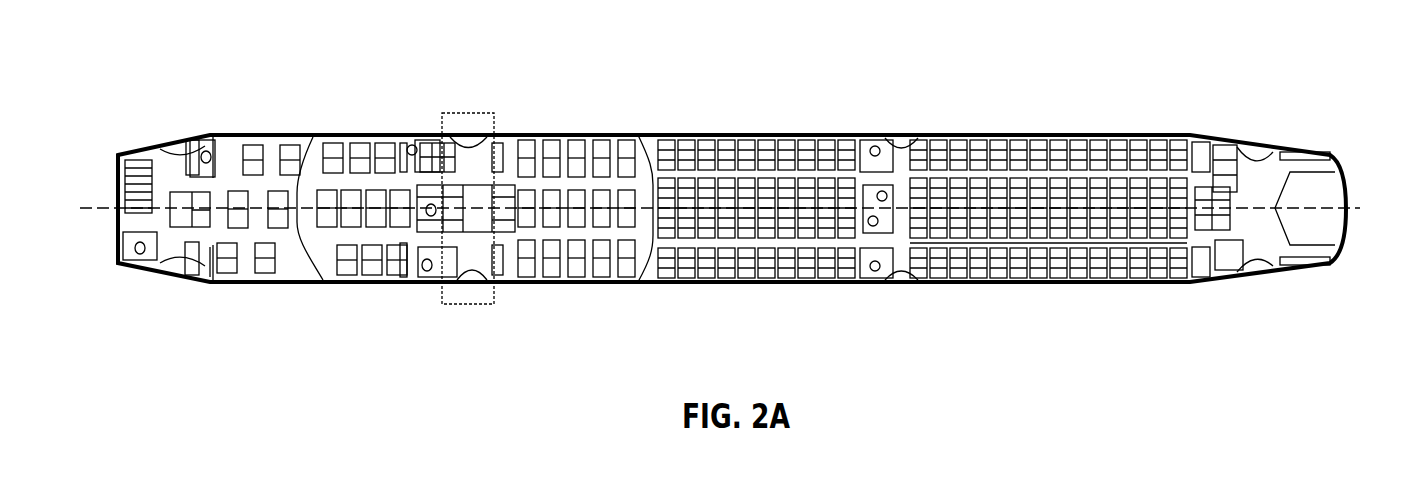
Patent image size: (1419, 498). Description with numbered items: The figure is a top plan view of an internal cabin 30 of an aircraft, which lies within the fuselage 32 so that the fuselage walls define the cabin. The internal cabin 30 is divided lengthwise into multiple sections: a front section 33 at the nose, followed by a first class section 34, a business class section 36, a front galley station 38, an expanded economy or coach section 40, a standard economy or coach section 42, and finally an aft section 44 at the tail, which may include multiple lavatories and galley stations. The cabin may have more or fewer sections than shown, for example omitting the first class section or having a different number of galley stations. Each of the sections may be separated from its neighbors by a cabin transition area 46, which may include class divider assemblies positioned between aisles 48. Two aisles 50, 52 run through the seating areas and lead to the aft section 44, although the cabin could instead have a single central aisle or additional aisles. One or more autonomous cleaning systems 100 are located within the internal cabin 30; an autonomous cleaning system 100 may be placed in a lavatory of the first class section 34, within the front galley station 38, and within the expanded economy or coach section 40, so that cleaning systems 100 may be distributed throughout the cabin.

The internal cabin 30 is at (257, 40).
The fuselage 32 is at (589, 93).
The front section 33 is at (176, 297).
The first class section 34 is at (273, 282).
The business class section 36 is at (350, 137).
The front galley station 38 is at (467, 297).
The expanded economy or coach section 40 is at (568, 282).
The standard economy or coach section 42 is at (697, 135).
The aft section 44 is at (1265, 165).
The cabin transition area 46 is at (197, 140).
The aisles 48 is at (455, 177).
The aisle 50 is at (1060, 175).
The aisle 52 is at (1077, 243).
The autonomous cleaning system 100 is at (460, 190).